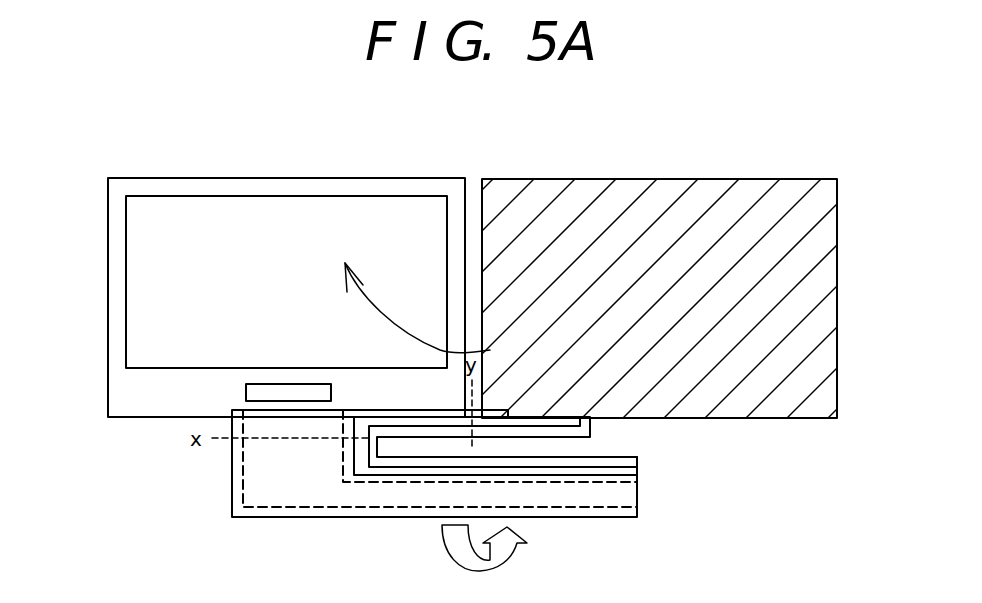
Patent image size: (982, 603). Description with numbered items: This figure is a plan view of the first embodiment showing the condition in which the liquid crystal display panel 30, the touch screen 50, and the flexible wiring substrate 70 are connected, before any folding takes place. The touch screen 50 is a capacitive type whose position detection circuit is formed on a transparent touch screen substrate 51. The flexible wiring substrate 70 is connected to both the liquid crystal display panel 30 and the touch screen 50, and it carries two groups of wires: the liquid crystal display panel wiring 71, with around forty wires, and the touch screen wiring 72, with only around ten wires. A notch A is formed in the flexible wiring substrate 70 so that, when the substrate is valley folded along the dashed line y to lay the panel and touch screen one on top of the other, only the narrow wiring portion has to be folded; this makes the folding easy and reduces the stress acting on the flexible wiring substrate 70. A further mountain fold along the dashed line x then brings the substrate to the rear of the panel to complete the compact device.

The liquid crystal display panel 30 is at (108, 297).
The touch screen 50 is at (838, 272).
The touch screen substrate 51 is at (287, 390).
The flexible wiring substrate 70 is at (590, 518).
The liquid crystal display panel wiring 71 is at (275, 492).
The touch screen wiring 72 is at (552, 418).
The notch A is at (567, 448).